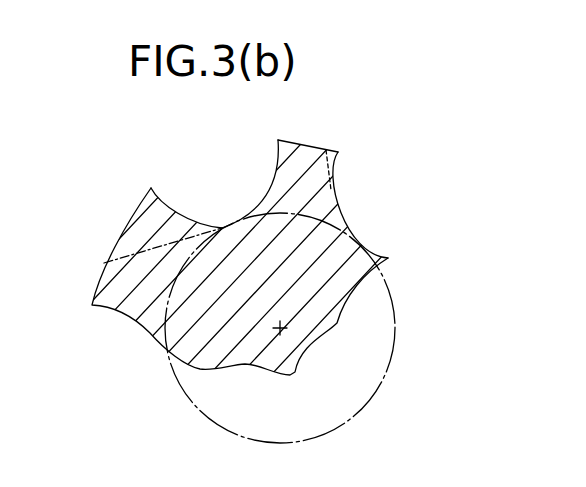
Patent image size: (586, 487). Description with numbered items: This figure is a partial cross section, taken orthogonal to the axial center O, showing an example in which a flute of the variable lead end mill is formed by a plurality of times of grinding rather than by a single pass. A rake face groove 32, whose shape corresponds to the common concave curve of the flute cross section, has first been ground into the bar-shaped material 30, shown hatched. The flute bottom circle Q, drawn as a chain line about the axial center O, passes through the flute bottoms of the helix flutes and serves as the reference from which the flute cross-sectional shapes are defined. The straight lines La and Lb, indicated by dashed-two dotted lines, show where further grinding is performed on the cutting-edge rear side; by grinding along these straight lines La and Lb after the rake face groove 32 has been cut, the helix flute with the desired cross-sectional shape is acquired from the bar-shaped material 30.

The bar-shaped material 30 is at (307, 323).
The rake face groove 32 is at (260, 209).
The straight line La is at (130, 256).
The straight line Lb is at (337, 162).
The axial center O is at (273, 336).
The flute bottom circle Q is at (333, 428).